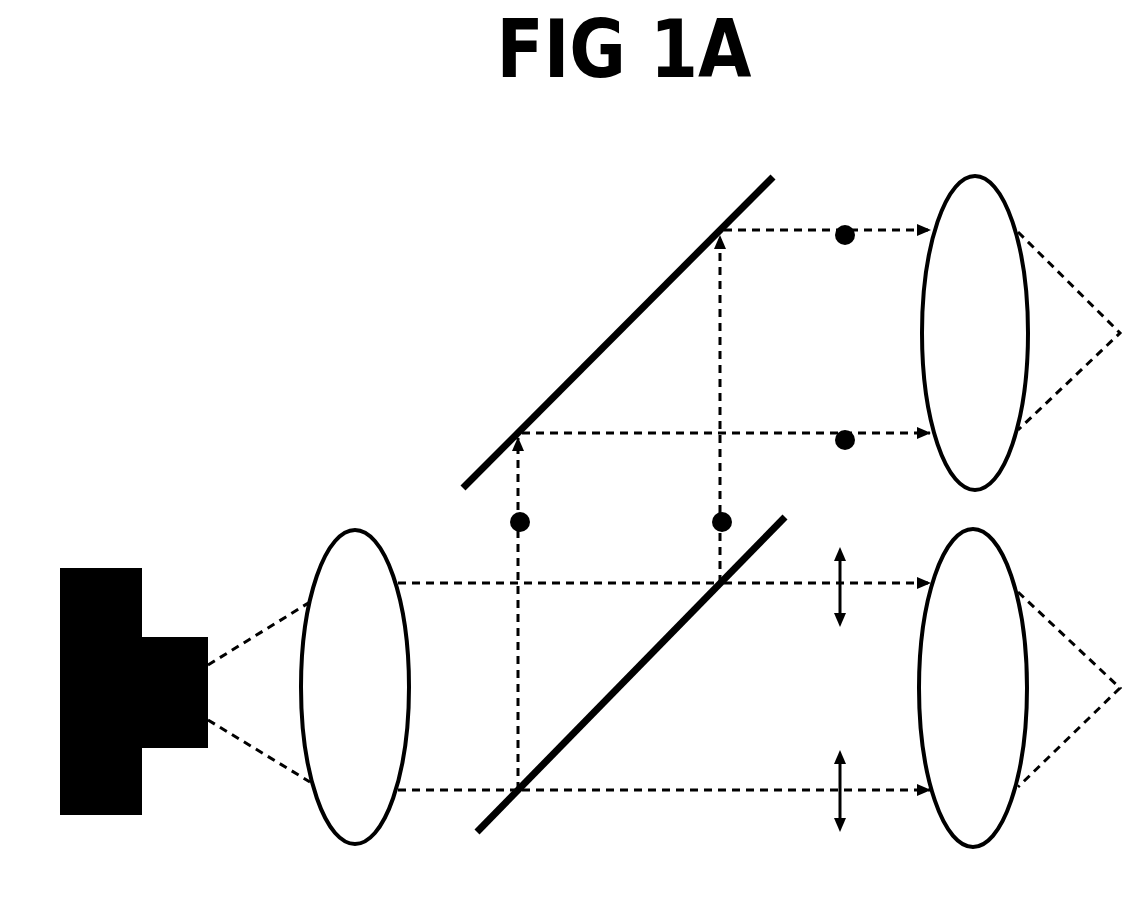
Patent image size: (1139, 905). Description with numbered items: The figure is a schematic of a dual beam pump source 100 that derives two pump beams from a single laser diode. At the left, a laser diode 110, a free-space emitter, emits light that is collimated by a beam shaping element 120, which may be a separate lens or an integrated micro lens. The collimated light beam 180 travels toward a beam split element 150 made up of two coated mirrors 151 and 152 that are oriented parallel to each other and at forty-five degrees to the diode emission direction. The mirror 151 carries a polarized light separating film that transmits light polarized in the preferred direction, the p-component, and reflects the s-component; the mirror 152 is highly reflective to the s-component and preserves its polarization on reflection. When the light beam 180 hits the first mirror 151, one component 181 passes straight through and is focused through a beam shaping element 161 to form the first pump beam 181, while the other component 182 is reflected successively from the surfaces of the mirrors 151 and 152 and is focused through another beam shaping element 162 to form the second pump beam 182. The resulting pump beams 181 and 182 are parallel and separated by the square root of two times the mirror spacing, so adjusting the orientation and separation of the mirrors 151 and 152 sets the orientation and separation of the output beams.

The dual beam pump source 100 is at (346, 301).
The laser diode 110 is at (134, 691).
The beam shaping element 120 is at (308, 687).
The beam split element 150 is at (618, 332).
The mirror 151 is at (631, 674).
The mirror 152 is at (619, 513).
The beam shaping element 161 is at (973, 688).
The beam shaping element 162 is at (975, 333).
The light beam 180 is at (559, 686).
The first pump beam 181 is at (821, 689).
The second pump beam 182 is at (815, 378).